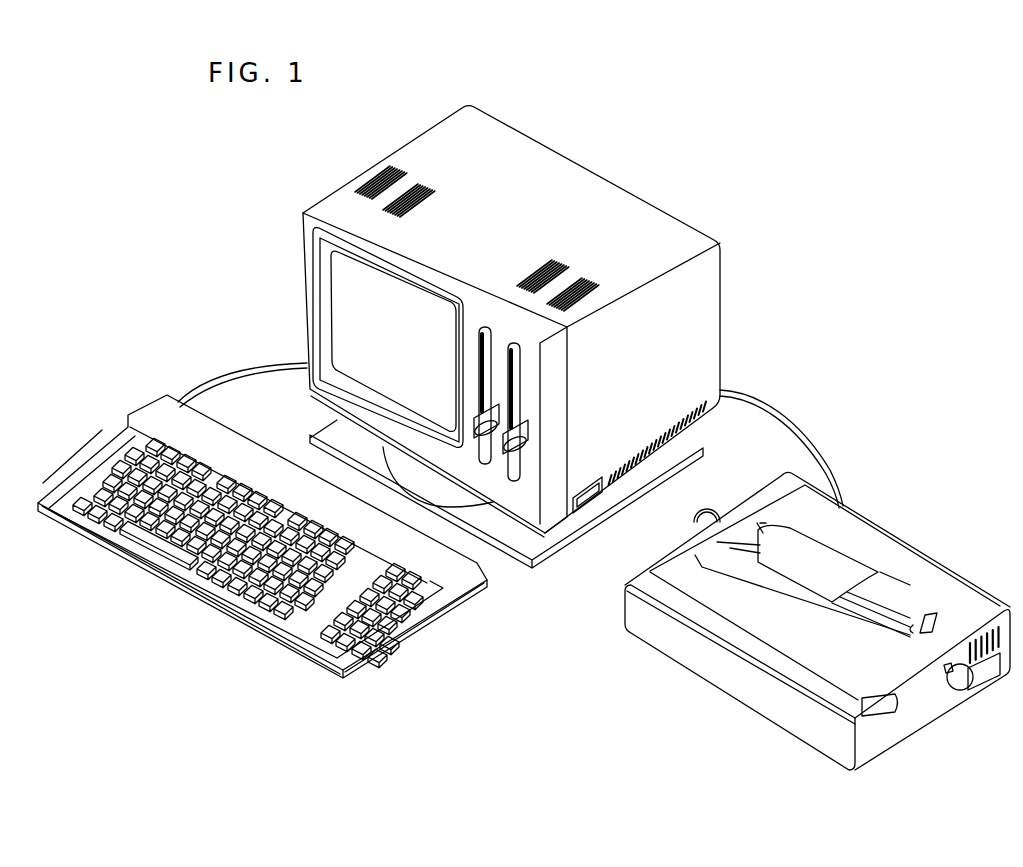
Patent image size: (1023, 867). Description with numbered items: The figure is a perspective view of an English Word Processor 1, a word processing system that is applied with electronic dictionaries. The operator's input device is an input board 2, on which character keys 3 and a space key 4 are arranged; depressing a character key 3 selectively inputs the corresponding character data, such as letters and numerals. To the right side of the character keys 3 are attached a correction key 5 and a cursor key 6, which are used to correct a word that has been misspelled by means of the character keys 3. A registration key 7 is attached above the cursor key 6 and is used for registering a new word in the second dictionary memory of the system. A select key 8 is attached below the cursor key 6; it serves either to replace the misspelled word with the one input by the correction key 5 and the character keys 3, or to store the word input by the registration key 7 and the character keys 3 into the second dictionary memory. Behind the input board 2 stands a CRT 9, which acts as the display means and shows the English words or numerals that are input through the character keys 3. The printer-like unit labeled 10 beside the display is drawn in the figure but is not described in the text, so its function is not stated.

The English Word Processor 1 is at (728, 291).
The input board 2 is at (260, 434).
The character keys 3 is at (74, 446).
The space key 4 is at (168, 580).
The correction key 5 is at (383, 622).
The cursor key 6 is at (335, 590).
The registration key 7 is at (363, 560).
The select key 8 is at (258, 620).
The CRT 9 is at (335, 308).
The printer 10 is at (652, 554).